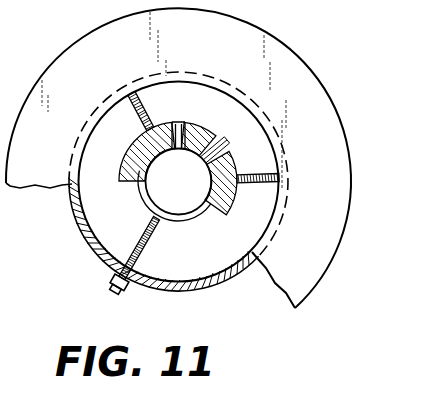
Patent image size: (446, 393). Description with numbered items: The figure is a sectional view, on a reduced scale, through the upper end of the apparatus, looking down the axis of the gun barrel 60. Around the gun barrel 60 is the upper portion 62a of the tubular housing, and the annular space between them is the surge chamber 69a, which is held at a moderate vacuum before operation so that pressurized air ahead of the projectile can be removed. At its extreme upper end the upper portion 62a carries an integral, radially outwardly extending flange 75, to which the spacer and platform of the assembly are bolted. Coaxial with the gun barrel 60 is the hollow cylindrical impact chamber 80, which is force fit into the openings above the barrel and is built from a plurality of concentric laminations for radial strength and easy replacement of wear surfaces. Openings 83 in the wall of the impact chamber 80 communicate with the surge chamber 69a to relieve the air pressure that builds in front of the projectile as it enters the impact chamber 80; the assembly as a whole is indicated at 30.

The hub assembly 30 is at (72, 223).
The gun barrel 60 is at (172, 222).
The upper portion 62a is at (209, 291).
The surge chamber 69a is at (117, 243).
The flange 75 is at (321, 268).
The impact chamber 80 is at (125, 195).
The openings 83 is at (140, 150).